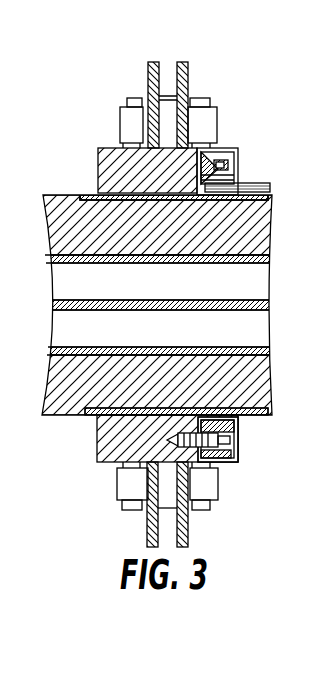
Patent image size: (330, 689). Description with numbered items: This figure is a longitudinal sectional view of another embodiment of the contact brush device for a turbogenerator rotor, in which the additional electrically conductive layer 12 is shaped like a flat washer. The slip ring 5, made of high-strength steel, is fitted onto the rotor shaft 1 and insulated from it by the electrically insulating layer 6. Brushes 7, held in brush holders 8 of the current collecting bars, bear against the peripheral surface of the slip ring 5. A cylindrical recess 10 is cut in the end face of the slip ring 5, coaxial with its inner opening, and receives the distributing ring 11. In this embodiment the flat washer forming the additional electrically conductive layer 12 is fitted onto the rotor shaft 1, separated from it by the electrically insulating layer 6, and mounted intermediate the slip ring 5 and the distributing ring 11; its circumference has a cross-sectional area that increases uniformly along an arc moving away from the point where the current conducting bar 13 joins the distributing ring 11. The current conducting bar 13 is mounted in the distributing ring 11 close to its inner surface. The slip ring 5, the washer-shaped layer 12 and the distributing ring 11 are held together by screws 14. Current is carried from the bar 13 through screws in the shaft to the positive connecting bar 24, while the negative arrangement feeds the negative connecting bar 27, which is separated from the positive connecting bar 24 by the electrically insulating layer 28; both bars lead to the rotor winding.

The shaft 1 is at (258, 375).
The slip ring 5 is at (117, 450).
The electrically insulating layer 6 is at (92, 411).
The brushes 7 is at (125, 503).
The brush holders 8 is at (137, 482).
The cylindrical recess 10 is at (218, 459).
The distributing ring 11 is at (238, 428).
The additional electrically conductive layer 12 is at (200, 191).
The current conducting bar 13 is at (248, 183).
The screws 14 is at (238, 453).
The positive connecting bar 24 is at (258, 272).
The negative connecting bar 27 is at (258, 336).
The electrically insulating layer 28 is at (258, 303).